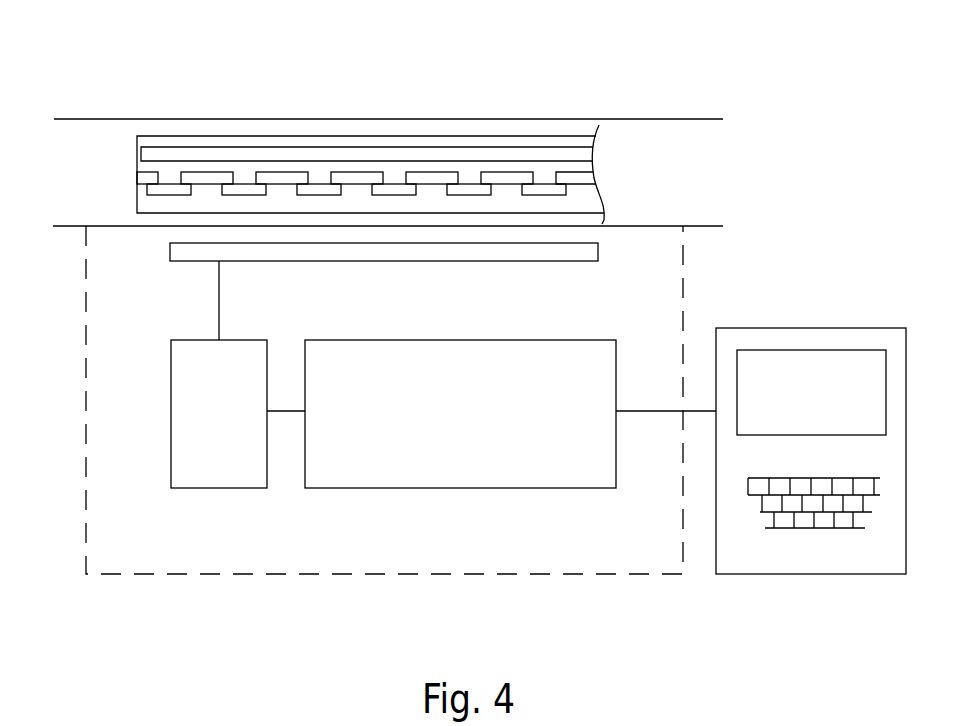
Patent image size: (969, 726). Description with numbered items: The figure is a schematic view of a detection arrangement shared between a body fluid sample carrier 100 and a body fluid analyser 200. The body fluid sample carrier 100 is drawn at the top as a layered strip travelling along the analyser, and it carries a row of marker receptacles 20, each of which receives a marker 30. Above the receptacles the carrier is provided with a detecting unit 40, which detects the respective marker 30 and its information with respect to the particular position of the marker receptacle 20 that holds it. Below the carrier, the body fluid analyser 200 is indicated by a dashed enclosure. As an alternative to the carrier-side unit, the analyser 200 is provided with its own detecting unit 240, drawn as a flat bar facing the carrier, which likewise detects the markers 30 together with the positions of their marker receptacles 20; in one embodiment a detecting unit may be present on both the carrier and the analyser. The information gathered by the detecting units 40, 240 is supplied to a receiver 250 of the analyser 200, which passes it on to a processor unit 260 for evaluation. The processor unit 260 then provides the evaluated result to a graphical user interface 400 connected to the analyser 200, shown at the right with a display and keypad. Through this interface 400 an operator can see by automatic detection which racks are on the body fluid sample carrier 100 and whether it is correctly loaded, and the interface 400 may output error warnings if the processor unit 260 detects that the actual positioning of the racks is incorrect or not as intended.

The body fluid sample carrier 100 is at (538, 135).
The detecting unit 40 is at (172, 153).
The marker 30 is at (298, 177).
The marker receptacle 20 is at (357, 177).
The body fluid analyser 200 is at (140, 537).
The detecting unit 240 is at (187, 253).
The receiver 250 is at (232, 461).
The processor unit 260 is at (447, 473).
The graphical user interface 400 is at (763, 335).